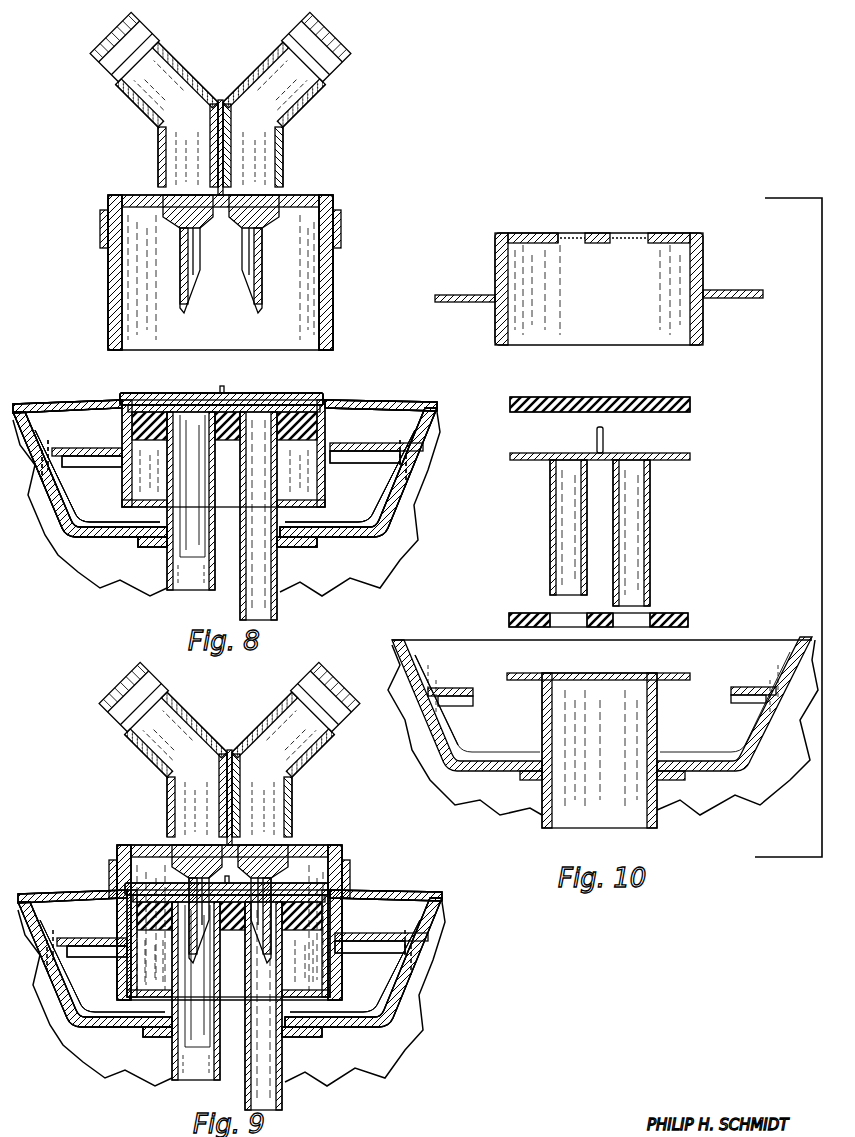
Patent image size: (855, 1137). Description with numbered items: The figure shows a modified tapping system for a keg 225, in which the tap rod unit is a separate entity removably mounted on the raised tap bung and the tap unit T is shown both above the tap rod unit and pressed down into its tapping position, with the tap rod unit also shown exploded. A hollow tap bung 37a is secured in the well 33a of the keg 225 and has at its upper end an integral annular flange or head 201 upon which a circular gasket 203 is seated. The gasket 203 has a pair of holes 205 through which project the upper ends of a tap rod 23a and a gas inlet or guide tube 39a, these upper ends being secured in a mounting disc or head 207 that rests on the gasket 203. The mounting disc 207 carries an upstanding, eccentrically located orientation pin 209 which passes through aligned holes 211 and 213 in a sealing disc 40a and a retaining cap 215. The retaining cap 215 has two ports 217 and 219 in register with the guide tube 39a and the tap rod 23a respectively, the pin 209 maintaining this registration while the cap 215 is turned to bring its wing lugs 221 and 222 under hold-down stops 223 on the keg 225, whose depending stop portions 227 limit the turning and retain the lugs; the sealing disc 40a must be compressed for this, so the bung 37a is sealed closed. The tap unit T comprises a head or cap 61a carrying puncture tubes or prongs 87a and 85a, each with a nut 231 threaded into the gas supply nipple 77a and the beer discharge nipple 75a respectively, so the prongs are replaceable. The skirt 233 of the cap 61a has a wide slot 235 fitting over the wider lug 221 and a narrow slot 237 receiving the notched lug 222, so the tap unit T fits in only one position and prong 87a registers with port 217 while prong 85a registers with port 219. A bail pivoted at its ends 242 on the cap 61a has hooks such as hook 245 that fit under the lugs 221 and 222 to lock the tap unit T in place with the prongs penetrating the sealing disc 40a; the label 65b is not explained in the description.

In FIG. 8, the beer discharge nipple 75a is at (303, 108).
In FIG. 9, the beer discharge nipple 75a is at (268, 712).
In FIG. 8, the gas supply nipple 77a is at (158, 133).
In FIG. 9, the gas supply nipple 77a is at (147, 756).
In FIG. 8, the tap unit T is at (313, 143).
In FIG. 8, the nut 231 is at (262, 196).
In FIG. 9, the nut 231 is at (276, 825).
In FIG. 8, the head or cap 61a is at (313, 200).
In FIG. 9, the head or cap 61a is at (320, 847).
In FIG. 8, the bail ends 242 is at (341, 218).
In FIG. 9, the bail ends 242 is at (351, 865).
In FIG. 8, the hook 245 is at (325, 273).
In FIG. 9, the hook 245 is at (350, 892).
In FIG. 8, the slot 235 is at (108, 330).
In FIG. 9, the slot 235 is at (125, 1030).
In FIG. 8, the slot 237 is at (334, 320).
In FIG. 9, the slot 237 is at (345, 977).
In FIG. 8, the skirt 233 is at (325, 272).
In FIG. 8, the puncture tube or prong 87a is at (180, 250).
In FIG. 9, the puncture tube or prong 87a is at (188, 968).
In FIG. 8, the puncture tube or prong 85a is at (262, 250).
In FIG. 9, the puncture tube or prong 85a is at (271, 955).
In FIG. 8, the sealing disc 40a is at (146, 390).
In FIG. 9, the sealing disc 40a is at (158, 850).
In FIG. 10, the sealing disc 40a is at (686, 397).
In FIG. 8, the port 217 is at (193, 392).
In FIG. 10, the port 217 is at (565, 232).
In FIG. 8, the orientation pin 209 is at (222, 388).
In FIG. 9, the orientation pin 209 is at (236, 840).
In FIG. 10, the orientation pin 209 is at (604, 437).
In FIG. 8, the port 219 is at (260, 393).
In FIG. 10, the port 219 is at (636, 232).
In FIG. 8, the retaining cap 215 is at (314, 393).
In FIG. 9, the retaining cap 215 is at (276, 880).
In FIG. 10, the retaining cap 215 is at (704, 253).
In FIG. 8, the mounting disc or head 207 is at (318, 404).
In FIG. 9, the mounting disc or head 207 is at (112, 894).
In FIG. 10, the mounting disc or head 207 is at (681, 453).
In FIG. 8, the gasket 203 is at (318, 430).
In FIG. 9, the gasket 203 is at (350, 902).
In FIG. 10, the gasket 203 is at (688, 612).
In FIG. 8, the annular flange or head 201 is at (133, 440).
In FIG. 9, the annular flange or head 201 is at (328, 963).
In FIG. 10, the annular flange or head 201 is at (707, 656).
In FIG. 8, the keg 225 is at (440, 380).
In FIG. 9, the keg 225 is at (424, 898).
In FIG. 10, the keg 225 is at (395, 640).
In FIG. 8, the hold-down stops or lugs 223 is at (383, 442).
In FIG. 9, the hold-down stops or lugs 223 is at (393, 932).
In FIG. 10, the hold-down stops or lugs 223 is at (748, 645).
In FIG. 8, the wing lug 221 is at (108, 466).
In FIG. 9, the wing lug 221 is at (108, 962).
In FIG. 10, the wing lug 221 is at (464, 302).
In FIG. 8, the wing lug 222 is at (331, 462).
In FIG. 9, the wing lug 222 is at (348, 962).
In FIG. 10, the wing lug 222 is at (741, 298).
In FIG. 8, the depending stop portions 227 is at (63, 480).
In FIG. 9, the depending stop portions 227 is at (60, 948).
In FIG. 10, the depending stop portions 227 is at (455, 706).
In FIG. 8, the gas inlet or guide tube 39a is at (205, 515).
In FIG. 9, the gas inlet or guide tube 39a is at (226, 1007).
In FIG. 10, the gas inlet or guide tube 39a is at (550, 524).
In FIG. 8, the tap bung 37a is at (282, 512).
In FIG. 9, the tap bung 37a is at (330, 990).
In FIG. 8, the well 33a is at (380, 502).
In FIG. 8, the tap rod 23a is at (240, 600).
In FIG. 9, the tap rod 23a is at (282, 1086).
In FIG. 10, the tap rod 23a is at (650, 516).
In FIG. 10, the hole 213 is at (597, 232).
In FIG. 10, the hole 211 is at (606, 396).
In FIG. 10, the holes 205 is at (620, 628).
In FIG. 10, the outlet spout 65b is at (660, 718).